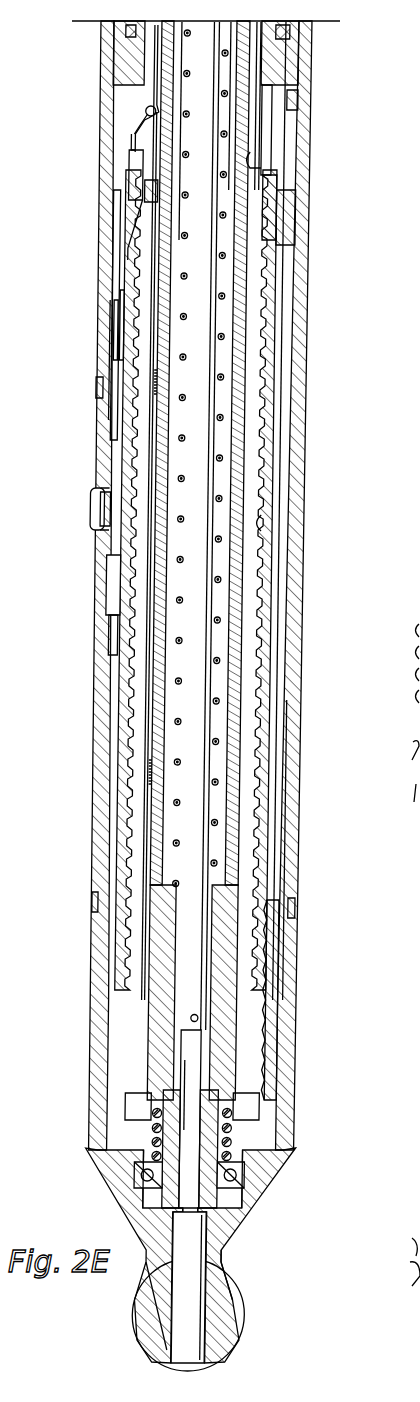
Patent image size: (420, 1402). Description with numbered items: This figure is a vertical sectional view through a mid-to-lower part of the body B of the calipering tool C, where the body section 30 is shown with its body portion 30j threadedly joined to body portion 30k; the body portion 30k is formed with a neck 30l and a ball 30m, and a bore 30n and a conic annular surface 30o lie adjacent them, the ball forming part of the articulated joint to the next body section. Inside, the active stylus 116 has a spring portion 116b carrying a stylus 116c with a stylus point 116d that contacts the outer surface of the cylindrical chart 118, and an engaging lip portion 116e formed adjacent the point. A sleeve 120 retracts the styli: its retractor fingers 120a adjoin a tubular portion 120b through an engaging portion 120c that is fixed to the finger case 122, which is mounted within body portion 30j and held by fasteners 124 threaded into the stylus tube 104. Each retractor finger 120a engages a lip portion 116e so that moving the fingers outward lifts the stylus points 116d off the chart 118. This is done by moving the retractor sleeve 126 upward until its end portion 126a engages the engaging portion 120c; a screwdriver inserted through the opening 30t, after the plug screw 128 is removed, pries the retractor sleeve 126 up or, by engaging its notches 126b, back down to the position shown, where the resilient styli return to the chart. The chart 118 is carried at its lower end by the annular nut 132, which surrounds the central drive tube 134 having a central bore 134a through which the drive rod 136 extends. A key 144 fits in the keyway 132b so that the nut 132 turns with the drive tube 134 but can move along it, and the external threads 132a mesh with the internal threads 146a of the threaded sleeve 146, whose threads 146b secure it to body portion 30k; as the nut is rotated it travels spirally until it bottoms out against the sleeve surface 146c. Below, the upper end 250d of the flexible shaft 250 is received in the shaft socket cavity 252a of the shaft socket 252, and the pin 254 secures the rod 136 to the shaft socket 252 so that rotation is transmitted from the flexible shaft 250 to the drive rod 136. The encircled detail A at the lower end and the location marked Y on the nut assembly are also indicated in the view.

The body section 30 is at (313, 38).
The body portion 30j is at (301, 100).
The body portion 30k is at (292, 830).
The opening 30t is at (100, 506).
The neck 30l is at (226, 1256).
The ball 30m is at (232, 1282).
The bore 30n is at (182, 1281).
The conic annular surface 30o is at (165, 1322).
The stylus tube 104 is at (283, 53).
The active stylus 116 is at (143, 90).
The spring portion 116b is at (146, 117).
The stylus 116c is at (147, 110).
The stylus point 116d is at (140, 92).
The engaging lip portion 116e is at (130, 138).
The cylindrical chart 118 is at (263, 118).
The sleeve 120 is at (117, 297).
The retractor fingers 120a is at (140, 165).
The tubular portion 120b is at (123, 330).
The engaging portion 120c is at (131, 248).
The finger case 122 is at (120, 343).
The fasteners 124 is at (117, 55).
The retractor sleeve 126 is at (126, 412).
The end portion 126a is at (128, 312).
The notches 126b is at (120, 580).
The plug screw 128 is at (100, 492).
The annular nut 132 is at (262, 242).
The external threads 132a is at (272, 226).
The keyway 132b is at (155, 192).
The central drive tube 134 is at (247, 130).
The central bore 134a is at (252, 162).
The drive rod 136 is at (211, 276).
The key 144 is at (162, 773).
The internally threaded sleeve 146 is at (273, 478).
The internal threads 146a is at (268, 523).
The threads 146b is at (285, 780).
The sleeve surface 146c is at (239, 1122).
The flexible shaft 250 is at (192, 1330).
The upper end 250d is at (198, 1058).
The shaft socket 252 is at (222, 1070).
The shaft socket cavity 252a is at (198, 1115).
The pin 254 is at (198, 1018).
The detail A is at (250, 1303).
The body B is at (98, 30).
The calipering tool C is at (318, 80).
The detail Y is at (298, 205).